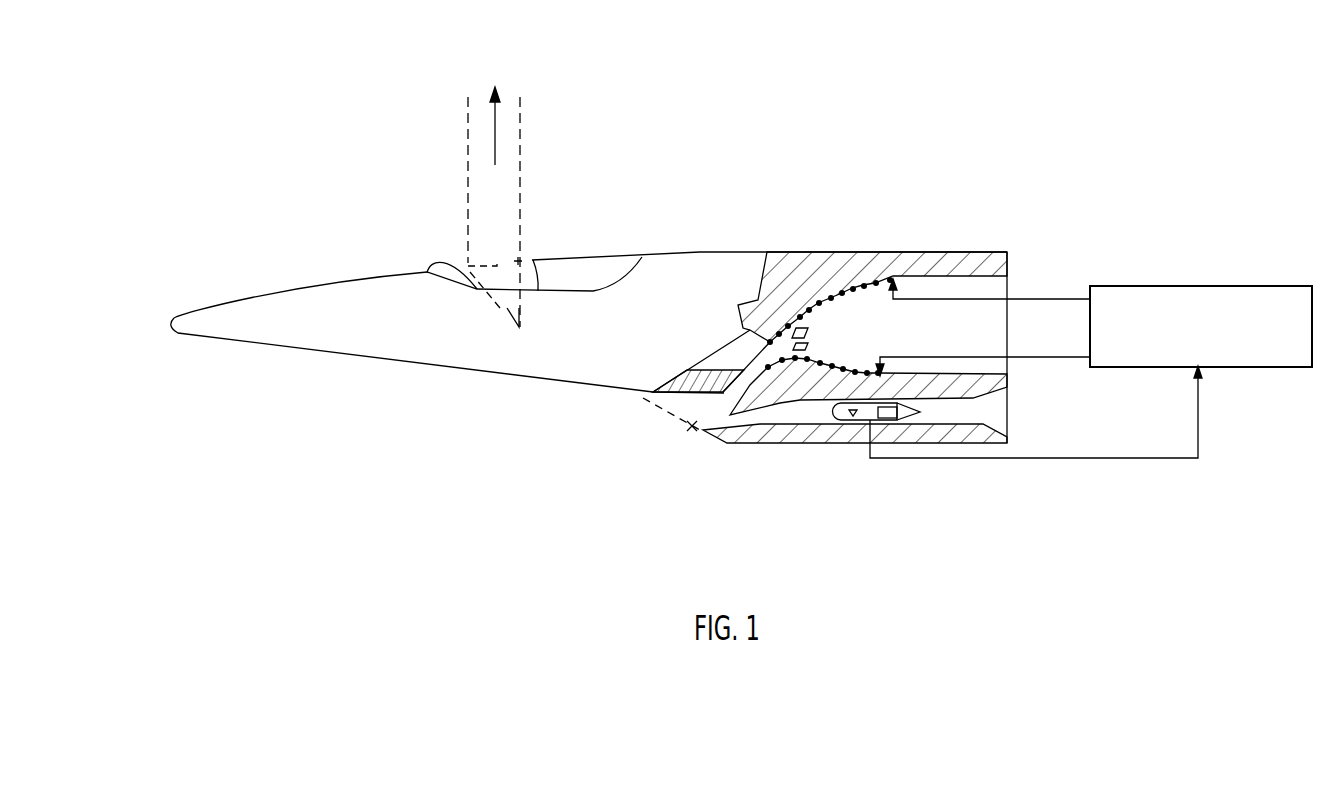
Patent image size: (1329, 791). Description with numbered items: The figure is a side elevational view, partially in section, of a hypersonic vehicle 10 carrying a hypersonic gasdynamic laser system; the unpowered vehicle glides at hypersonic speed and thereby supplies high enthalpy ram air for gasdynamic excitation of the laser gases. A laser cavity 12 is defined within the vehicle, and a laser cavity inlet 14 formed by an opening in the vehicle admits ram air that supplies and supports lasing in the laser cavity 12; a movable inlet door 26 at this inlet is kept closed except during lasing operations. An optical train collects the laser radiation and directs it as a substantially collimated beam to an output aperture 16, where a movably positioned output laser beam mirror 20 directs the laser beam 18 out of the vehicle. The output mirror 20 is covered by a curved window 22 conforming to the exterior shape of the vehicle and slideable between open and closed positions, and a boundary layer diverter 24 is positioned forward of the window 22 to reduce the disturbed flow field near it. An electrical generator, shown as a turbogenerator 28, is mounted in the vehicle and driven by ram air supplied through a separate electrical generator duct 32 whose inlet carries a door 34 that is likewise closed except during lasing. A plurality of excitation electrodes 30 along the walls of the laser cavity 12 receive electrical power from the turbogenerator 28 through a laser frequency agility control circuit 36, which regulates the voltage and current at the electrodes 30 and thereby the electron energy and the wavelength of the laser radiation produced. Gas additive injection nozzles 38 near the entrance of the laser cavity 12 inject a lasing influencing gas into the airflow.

The hypersonic vehicle 10 is at (385, 320).
The laser cavity 12 is at (968, 344).
The laser cavity inlet 14 is at (697, 428).
The output aperture 16 is at (518, 262).
The laser beam 18 is at (484, 83).
The output laser beam mirror 20 is at (497, 305).
The curved window 22 is at (497, 260).
The boundary layer diverter 24 is at (438, 262).
The movable inlet door 26 is at (673, 413).
The turbogenerator 28 is at (878, 418).
The excitation electrodes 30 is at (845, 368).
The electrical generator duct 32 is at (798, 421).
The door 34 is at (700, 431).
The laser frequency agility control circuit 36 is at (1185, 361).
The gas additive injection nozzles 38 is at (810, 348).